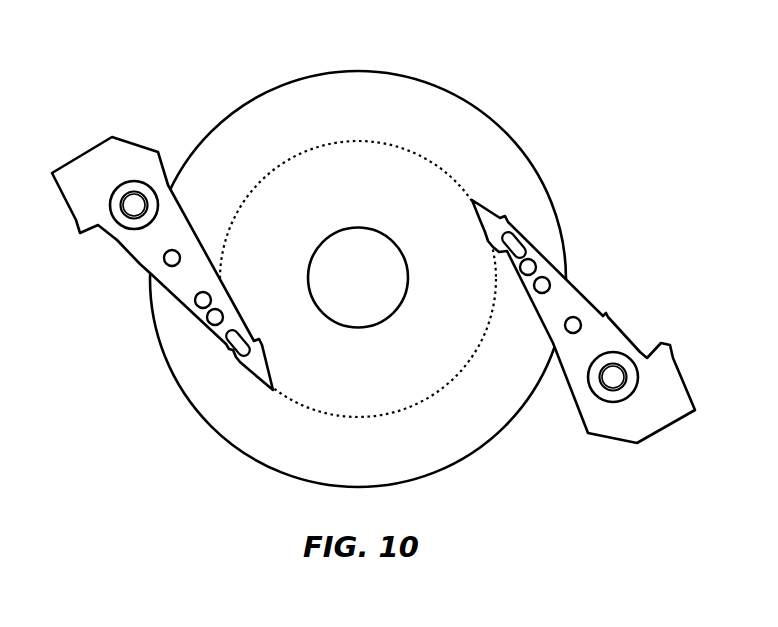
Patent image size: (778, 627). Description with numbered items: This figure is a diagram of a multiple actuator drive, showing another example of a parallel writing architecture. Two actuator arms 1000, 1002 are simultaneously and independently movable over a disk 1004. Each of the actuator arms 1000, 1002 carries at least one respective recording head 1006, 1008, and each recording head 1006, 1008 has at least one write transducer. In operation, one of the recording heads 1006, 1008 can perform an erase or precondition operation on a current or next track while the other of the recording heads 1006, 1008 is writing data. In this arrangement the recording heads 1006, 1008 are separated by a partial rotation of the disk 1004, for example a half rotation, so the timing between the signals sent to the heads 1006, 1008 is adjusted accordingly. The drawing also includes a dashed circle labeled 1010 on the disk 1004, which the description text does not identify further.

The actuator arm 1000 is at (164, 284).
The actuator arm 1002 is at (577, 293).
The disk 1004 is at (497, 125).
The recording head 1006 is at (272, 392).
The recording head 1008 is at (470, 197).
The data track 1010 is at (353, 418).